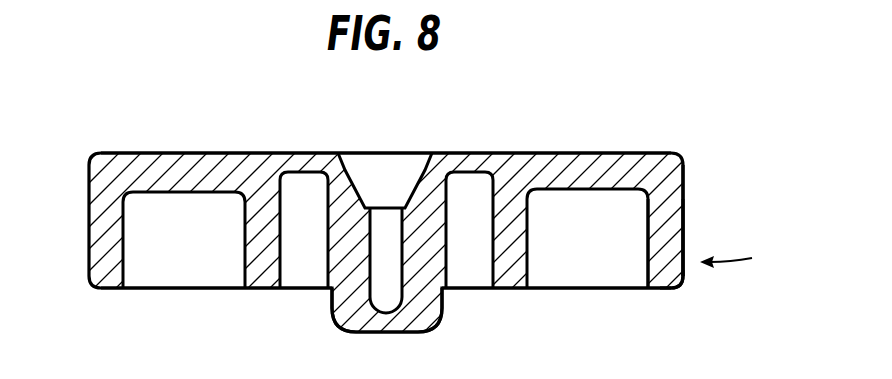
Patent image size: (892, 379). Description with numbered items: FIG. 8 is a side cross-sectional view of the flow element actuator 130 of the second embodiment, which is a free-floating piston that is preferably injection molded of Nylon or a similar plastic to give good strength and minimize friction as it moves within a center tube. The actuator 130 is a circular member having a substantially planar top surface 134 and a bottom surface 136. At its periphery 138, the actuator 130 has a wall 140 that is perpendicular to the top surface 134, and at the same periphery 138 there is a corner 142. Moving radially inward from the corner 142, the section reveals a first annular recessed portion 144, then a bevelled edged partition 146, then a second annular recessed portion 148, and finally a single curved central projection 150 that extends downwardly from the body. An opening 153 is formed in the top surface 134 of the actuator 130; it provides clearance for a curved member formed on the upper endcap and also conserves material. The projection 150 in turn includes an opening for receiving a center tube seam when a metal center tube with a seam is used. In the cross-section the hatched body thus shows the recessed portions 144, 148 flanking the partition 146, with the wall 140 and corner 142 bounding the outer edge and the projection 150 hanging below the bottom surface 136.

The flow element actuator 130 is at (738, 112).
The top surface 134 is at (470, 153).
The bottom surface 136 is at (560, 290).
The periphery 138 is at (751, 258).
The wall 140 is at (686, 225).
The corner 142 is at (690, 287).
The first annular recessed portion 144 is at (648, 258).
The bevelled edged partition 146 is at (512, 243).
The second annular recessed portion 148 is at (443, 258).
The curved central projection 150 is at (342, 300).
The opening 153 is at (416, 206).